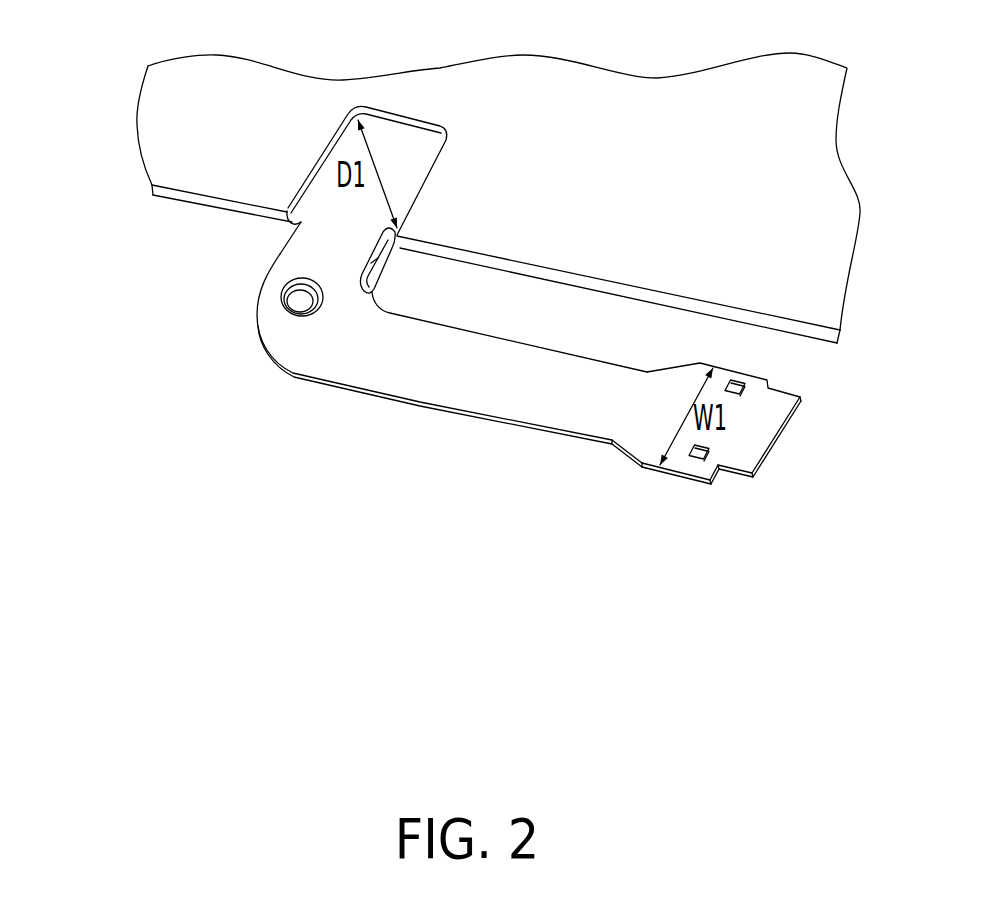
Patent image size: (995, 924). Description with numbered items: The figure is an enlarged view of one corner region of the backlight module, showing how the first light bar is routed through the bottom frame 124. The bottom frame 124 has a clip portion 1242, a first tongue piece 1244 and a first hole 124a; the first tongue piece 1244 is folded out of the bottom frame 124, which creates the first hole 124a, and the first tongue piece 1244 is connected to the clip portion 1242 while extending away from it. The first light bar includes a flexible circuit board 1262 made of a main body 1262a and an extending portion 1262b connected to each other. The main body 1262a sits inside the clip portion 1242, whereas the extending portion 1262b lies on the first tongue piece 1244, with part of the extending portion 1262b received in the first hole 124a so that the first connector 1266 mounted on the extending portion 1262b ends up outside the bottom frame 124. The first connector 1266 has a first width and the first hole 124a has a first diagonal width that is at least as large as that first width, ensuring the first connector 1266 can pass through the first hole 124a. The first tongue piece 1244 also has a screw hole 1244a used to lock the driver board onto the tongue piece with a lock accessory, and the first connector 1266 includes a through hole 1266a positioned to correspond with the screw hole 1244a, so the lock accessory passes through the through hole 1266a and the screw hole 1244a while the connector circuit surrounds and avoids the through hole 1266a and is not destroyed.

The bottom frame 124 is at (450, 391).
The clip portion 1242 is at (180, 197).
The first hole 124a is at (303, 172).
The first tongue piece 1244 is at (365, 262).
The screw hole 1244a is at (297, 302).
The flexible circuit board 1262 is at (529, 388).
The main body 1262a is at (403, 183).
The extending portion 1262b is at (477, 383).
The first connector 1266 is at (748, 453).
The through hole 1266a is at (315, 308).